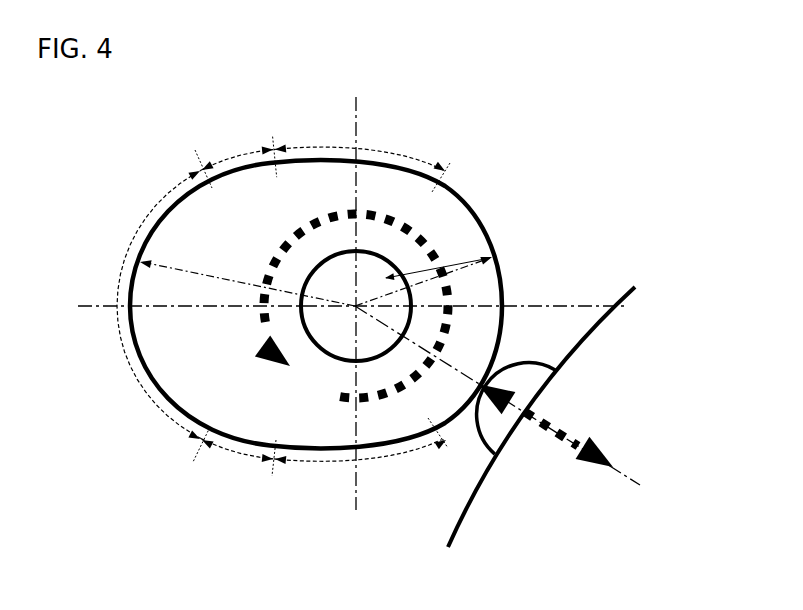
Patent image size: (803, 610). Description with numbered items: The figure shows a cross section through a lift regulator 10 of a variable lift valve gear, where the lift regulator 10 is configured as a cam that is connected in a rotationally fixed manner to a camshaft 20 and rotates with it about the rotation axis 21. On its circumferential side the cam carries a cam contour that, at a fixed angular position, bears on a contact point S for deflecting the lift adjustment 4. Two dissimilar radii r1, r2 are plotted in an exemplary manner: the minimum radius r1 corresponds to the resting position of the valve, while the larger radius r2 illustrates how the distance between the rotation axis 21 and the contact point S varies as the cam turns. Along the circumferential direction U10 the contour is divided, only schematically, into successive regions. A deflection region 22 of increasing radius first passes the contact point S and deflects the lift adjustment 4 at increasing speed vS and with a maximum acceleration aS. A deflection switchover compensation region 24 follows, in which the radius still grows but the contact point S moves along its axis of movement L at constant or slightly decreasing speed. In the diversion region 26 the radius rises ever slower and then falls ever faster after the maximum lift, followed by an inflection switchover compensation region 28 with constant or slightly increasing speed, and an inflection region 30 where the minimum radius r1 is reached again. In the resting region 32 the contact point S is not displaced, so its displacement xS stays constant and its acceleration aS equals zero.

The lift regulator 10 is at (90, 141).
The camshaft 20 is at (456, 273).
The rotation axis 21 is at (318, 315).
The deflection region 22 is at (330, 470).
The deflection switchover compensation region 24 is at (242, 460).
The diversion region 26 is at (117, 257).
The inflection switchover compensation region 28 is at (241, 154).
The inflection region 30 is at (399, 152).
The resting region 32 is at (452, 186).
The lift adjustment 4 is at (533, 352).
The contact point S is at (518, 366).
The minimum radius r1 is at (455, 272).
The radius r2 is at (227, 276).
The circumferential direction U10 is at (258, 352).
The axis of movement L is at (621, 470).
The displacement of the contact point xS is at (611, 432).
The speed of the contact point vS is at (611, 432).
The acceleration of the contact point aS is at (590, 428).